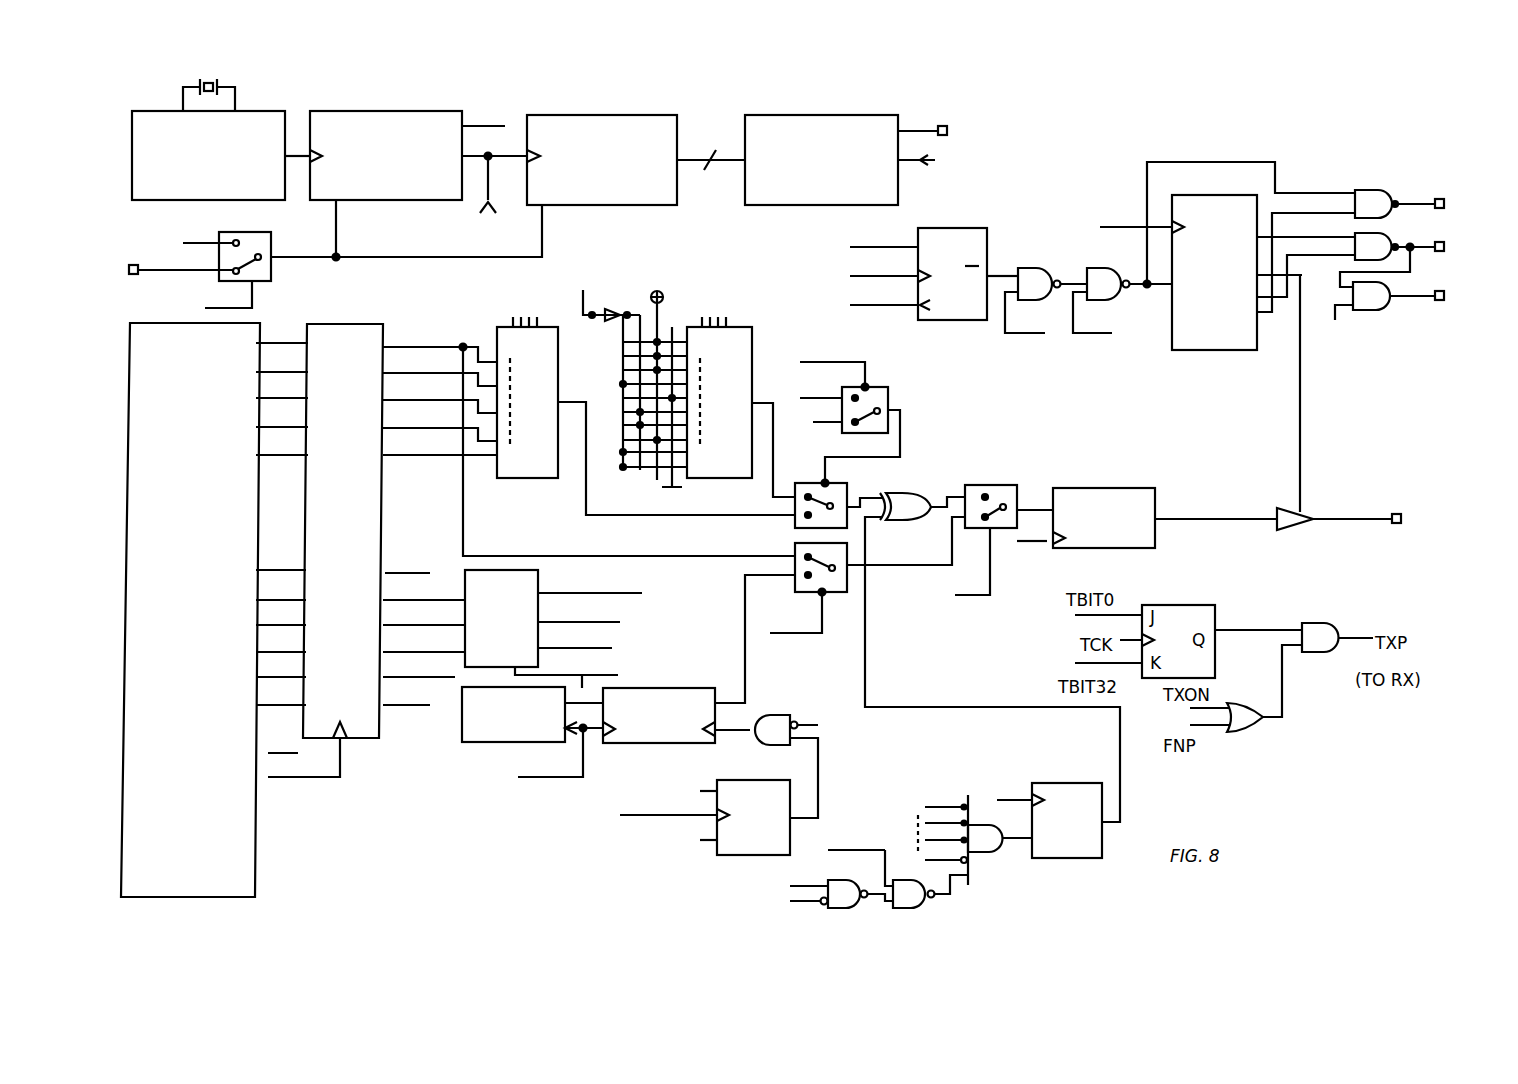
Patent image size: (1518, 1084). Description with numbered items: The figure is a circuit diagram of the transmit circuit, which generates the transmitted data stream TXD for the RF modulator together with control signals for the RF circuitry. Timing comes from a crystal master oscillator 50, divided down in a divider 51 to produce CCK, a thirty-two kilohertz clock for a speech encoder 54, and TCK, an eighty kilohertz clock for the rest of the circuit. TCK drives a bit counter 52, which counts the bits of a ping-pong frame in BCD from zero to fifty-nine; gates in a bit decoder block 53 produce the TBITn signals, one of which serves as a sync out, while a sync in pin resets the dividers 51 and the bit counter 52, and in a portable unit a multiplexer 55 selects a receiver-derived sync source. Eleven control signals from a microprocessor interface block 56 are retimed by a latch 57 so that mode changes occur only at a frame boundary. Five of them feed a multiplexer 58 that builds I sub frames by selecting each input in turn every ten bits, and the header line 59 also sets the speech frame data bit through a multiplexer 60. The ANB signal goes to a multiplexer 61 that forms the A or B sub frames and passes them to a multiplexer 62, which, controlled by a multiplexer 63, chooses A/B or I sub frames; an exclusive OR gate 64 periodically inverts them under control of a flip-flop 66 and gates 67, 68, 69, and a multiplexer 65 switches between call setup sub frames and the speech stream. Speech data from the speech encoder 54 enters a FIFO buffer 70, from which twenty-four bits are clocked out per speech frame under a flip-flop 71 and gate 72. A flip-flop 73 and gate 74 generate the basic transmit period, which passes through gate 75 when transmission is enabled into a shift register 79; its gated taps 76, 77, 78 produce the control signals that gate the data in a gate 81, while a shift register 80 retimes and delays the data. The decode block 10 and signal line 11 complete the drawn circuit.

The 2:4 decoder 10 is at (536, 678).
The TBITn signal line 11 is at (940, 170).
The crystal master oscillator 50 is at (220, 139).
The divider 51 is at (406, 169).
The bit counter 52 is at (636, 141).
The bit decoder block 53 is at (892, 141).
The speech encoder 54 is at (532, 754).
The multiplexer 55 is at (212, 266).
The microprocessor interface block 56 is at (214, 610).
The latch 57 is at (382, 547).
The multiplexer 58 is at (630, 416).
The line 59 is at (606, 417).
The multiplexer 60 is at (862, 587).
The multiplexer 61 is at (682, 405).
The multiplexer 62 is at (872, 469).
The multiplexer 63 is at (836, 396).
The exclusive OR gate 64 is at (922, 523).
The multiplexer 65 is at (998, 533).
The flip-flop 66 is at (992, 710).
The gate 67 is at (942, 820).
The gate 68 is at (929, 868).
The gate 69 is at (801, 887).
The first-in/first-out (FIFO) buffer 70 is at (692, 677).
The flip-flop 71 is at (682, 842).
The gate 72 is at (785, 745).
The flip-flop 73 is at (924, 318).
The gate 74 is at (1046, 264).
The gate 75 is at (1117, 264).
The gated tap 76 is at (1401, 190).
The gated tap 77 is at (1395, 220).
The gated tap 78 is at (1380, 328).
The shift register 79 is at (1227, 290).
The shift register 80 is at (1165, 469).
The gate 81 is at (1359, 422).